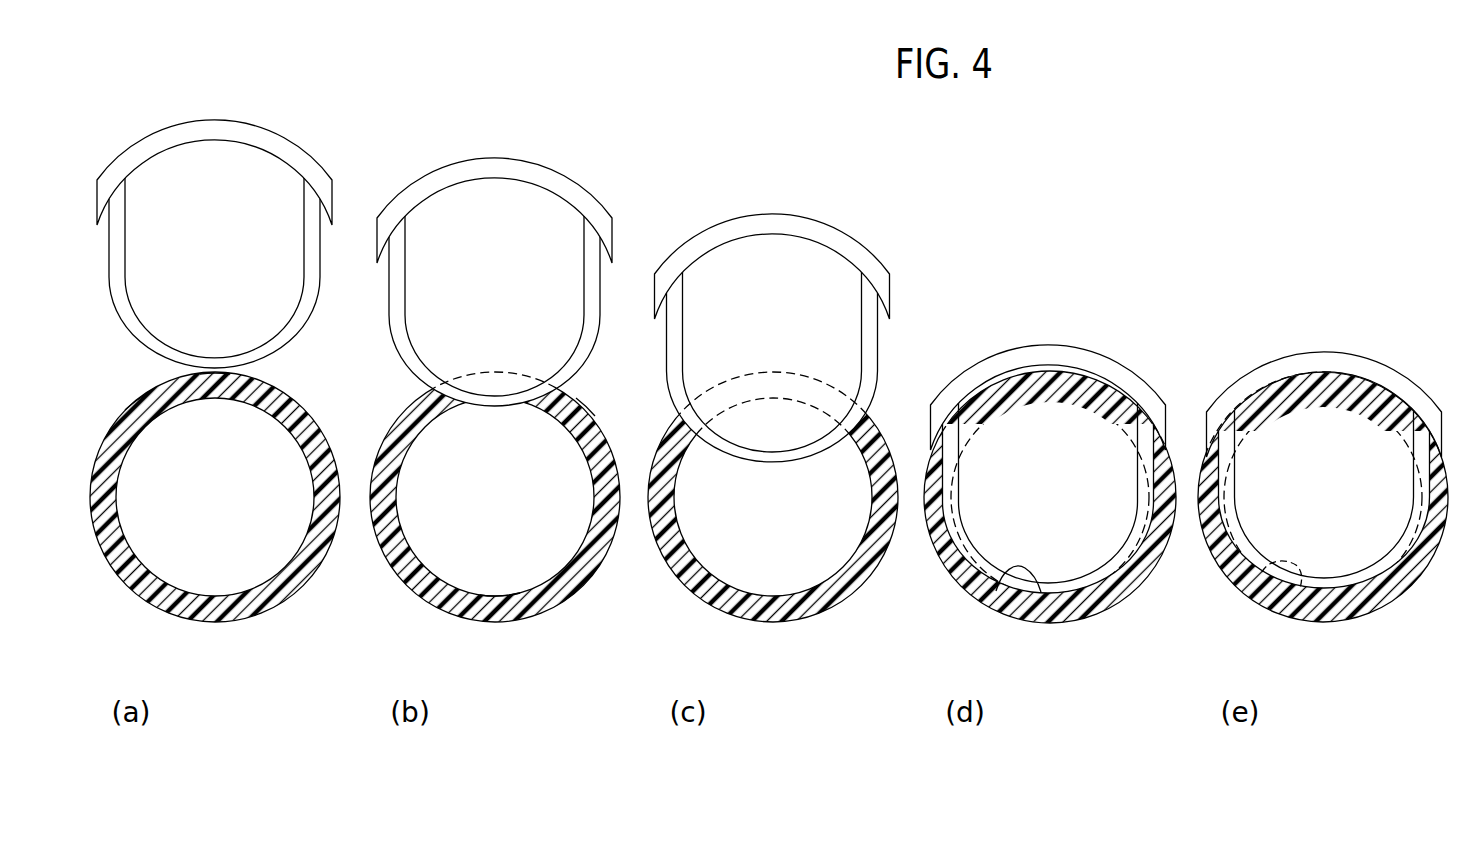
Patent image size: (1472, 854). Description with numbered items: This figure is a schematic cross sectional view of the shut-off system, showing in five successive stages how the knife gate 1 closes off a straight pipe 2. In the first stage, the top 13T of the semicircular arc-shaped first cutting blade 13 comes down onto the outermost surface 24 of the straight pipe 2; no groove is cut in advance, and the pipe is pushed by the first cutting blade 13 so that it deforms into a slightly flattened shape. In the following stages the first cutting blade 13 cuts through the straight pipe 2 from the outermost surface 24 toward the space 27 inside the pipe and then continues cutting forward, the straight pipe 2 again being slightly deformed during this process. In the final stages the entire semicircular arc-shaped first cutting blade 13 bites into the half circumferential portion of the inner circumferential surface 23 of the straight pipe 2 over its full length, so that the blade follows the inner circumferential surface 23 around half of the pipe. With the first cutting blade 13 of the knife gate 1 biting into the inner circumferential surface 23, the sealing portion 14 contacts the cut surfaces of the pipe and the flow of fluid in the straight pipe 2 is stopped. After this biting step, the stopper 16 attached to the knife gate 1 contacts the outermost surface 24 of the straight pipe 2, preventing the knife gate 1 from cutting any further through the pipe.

The knife gate 1 is at (1332, 518).
The straight pipe 2 is at (286, 586).
The first cutting blade 13 is at (280, 356).
The top of the first cutting blade 13T is at (210, 376).
The sealing portion 14 is at (1053, 383).
The stopper 16 is at (1390, 380).
The inner circumferential surface 23 is at (1000, 583).
The outermost surface 24 is at (130, 403).
The space 27 is at (500, 576).